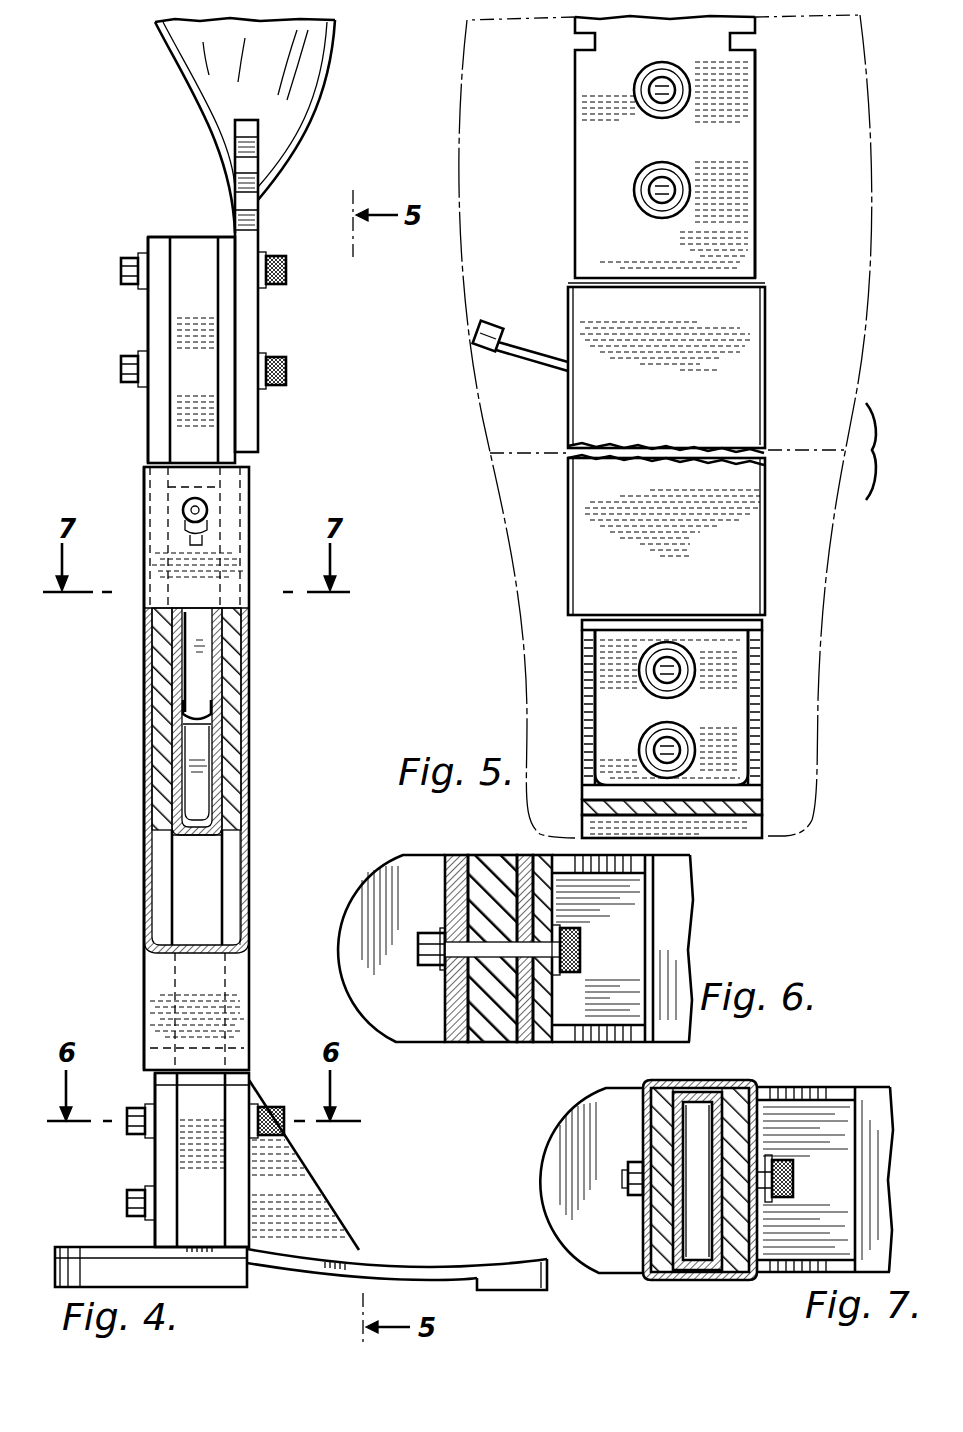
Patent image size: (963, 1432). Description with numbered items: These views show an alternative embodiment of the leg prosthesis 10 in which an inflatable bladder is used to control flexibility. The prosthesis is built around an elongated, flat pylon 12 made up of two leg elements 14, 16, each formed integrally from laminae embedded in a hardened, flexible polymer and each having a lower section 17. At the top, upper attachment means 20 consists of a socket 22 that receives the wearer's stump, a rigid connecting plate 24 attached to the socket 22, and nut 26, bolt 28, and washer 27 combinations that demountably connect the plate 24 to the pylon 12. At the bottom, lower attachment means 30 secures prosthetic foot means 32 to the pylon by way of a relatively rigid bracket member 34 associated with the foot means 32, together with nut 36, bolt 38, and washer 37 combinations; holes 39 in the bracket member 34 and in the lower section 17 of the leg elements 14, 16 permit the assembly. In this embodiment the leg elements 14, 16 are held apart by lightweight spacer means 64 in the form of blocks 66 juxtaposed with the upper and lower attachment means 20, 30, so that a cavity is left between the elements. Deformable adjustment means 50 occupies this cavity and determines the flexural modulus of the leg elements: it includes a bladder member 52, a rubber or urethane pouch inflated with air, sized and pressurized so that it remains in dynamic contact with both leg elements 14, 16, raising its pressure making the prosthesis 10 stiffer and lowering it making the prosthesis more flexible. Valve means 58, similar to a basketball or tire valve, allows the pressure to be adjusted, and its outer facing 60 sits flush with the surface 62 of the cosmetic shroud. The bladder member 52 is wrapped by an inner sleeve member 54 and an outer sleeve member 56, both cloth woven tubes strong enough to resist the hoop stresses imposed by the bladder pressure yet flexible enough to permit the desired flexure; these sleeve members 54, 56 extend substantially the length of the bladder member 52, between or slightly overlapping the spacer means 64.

In FIG. 4, the leg prosthesis 10 is at (124, 749).
In FIG. 4, the pylon 12 is at (272, 713).
In FIG. 4, the leg element 14 is at (258, 446).
In FIG. 5, the leg element 14 is at (758, 283).
In FIG. 6, the leg element 14 is at (528, 1045).
In FIG. 7, the leg element 14 is at (737, 1282).
In FIG. 4, the leg element 16 is at (148, 452).
In FIG. 6, the leg element 16 is at (455, 1045).
In FIG. 7, the leg element 16 is at (668, 1280).
In FIG. 4, the lower section 17 is at (156, 1087).
In FIG. 5, the lower section 17 is at (582, 623).
In FIG. 4, the upper attachment means 20 is at (130, 334).
In FIG. 5, the upper attachment means 20 is at (778, 192).
In FIG. 4, the socket 22 is at (190, 96).
In FIG. 4, the rigid connecting plate 24 is at (262, 235).
In FIG. 5, the rigid connecting plate 24 is at (735, 137).
In FIG. 4, the nut 26 is at (128, 292).
In FIG. 4, the washer 27 is at (135, 253).
In FIG. 5, the washer 27 is at (635, 80).
In FIG. 4, the bolt 28 is at (288, 275).
In FIG. 5, the bolt 28 is at (645, 98).
In FIG. 4, the lower attachment means 30 is at (108, 1223).
In FIG. 5, the lower attachment means 30 is at (797, 736).
In FIG. 4, the prosthetic foot means 32 is at (380, 1260).
In FIG. 5, the prosthetic foot means 32 is at (785, 808).
In FIG. 6, the prosthetic foot means 32 is at (420, 868).
In FIG. 4, the bracket member 34 is at (312, 1195).
In FIG. 5, the bracket member 34 is at (765, 692).
In FIG. 6, the bracket member 34 is at (640, 865).
In FIG. 7, the bracket member 34 is at (800, 1087).
In FIG. 4, the nut 36 is at (128, 1133).
In FIG. 6, the nut 36 is at (425, 946).
In FIG. 7, the nut 36 is at (620, 1180).
In FIG. 4, the washer 37 is at (148, 1150).
In FIG. 5, the washer 37 is at (638, 665).
In FIG. 6, the washer 37 is at (440, 925).
In FIG. 7, the washer 37 is at (775, 1205).
In FIG. 5, the bolt 38 is at (645, 682).
In FIG. 6, the bolt 38 is at (605, 962).
In FIG. 7, the bolt 38 is at (794, 1195).
In FIG. 6, the hole 39 is at (650, 942).
In FIG. 4, the deformable adjustment means 50 is at (150, 685).
In FIG. 7, the deformable adjustment means 50 is at (648, 1265).
In FIG. 4, the bladder member 52 is at (212, 760).
In FIG. 7, the bladder member 52 is at (694, 1275).
In FIG. 4, the inner sleeve member 54 is at (197, 838).
In FIG. 7, the inner sleeve member 54 is at (648, 1112).
In FIG. 4, the outer sleeve member 56 is at (250, 604).
In FIG. 5, the outer sleeve member 56 is at (620, 408).
In FIG. 7, the outer sleeve member 56 is at (712, 1082).
In FIG. 4, the valve means 58 is at (190, 542).
In FIG. 5, the valve means 58 is at (522, 354).
In FIG. 4, the outer facing 60 is at (209, 511).
In FIG. 5, the outer facing 60 is at (474, 332).
In FIG. 5, the surface 62 is at (462, 132).
In FIG. 4, the spacer means 64 is at (203, 248).
In FIG. 4, the block 66 is at (178, 240).
In FIG. 6, the block 66 is at (505, 868).